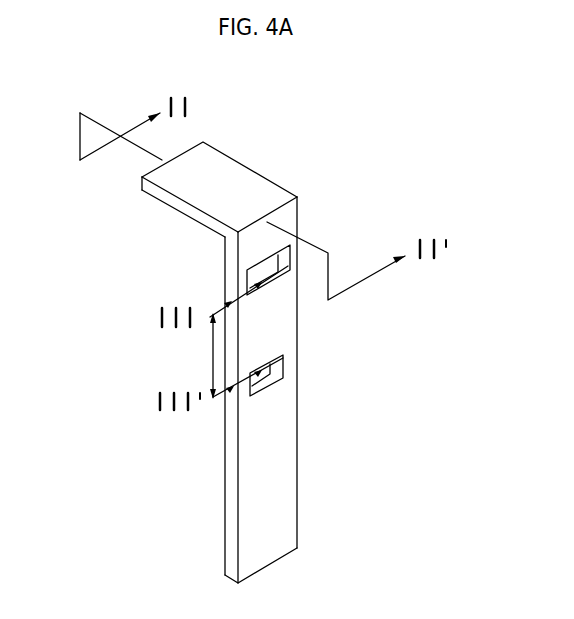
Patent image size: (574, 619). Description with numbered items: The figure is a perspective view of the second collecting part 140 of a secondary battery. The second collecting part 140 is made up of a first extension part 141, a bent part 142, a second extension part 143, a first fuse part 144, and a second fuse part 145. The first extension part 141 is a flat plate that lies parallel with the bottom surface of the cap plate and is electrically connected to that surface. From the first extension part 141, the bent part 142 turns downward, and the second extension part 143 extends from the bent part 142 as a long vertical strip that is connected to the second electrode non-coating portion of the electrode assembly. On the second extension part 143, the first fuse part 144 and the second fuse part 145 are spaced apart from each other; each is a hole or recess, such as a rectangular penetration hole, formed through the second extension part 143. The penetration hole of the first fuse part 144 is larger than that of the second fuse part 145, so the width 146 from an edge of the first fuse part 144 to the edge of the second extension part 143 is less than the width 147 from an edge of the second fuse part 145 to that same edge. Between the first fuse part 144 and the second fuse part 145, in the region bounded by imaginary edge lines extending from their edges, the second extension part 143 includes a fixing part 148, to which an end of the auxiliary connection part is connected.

The second collecting part 140 is at (369, 149).
The first extension part 141 is at (230, 170).
The bent part 142 is at (278, 205).
The second extension part 143 is at (288, 500).
The first fuse part 144 is at (290, 276).
The second fuse part 145 is at (284, 368).
The width from an edge of the first fuse part to an edge of the second extension par 146 is at (244, 288).
The width from an edge of the second fuse part to an edge of the second extension pa 147 is at (250, 393).
The fixing part 148 is at (213, 356).